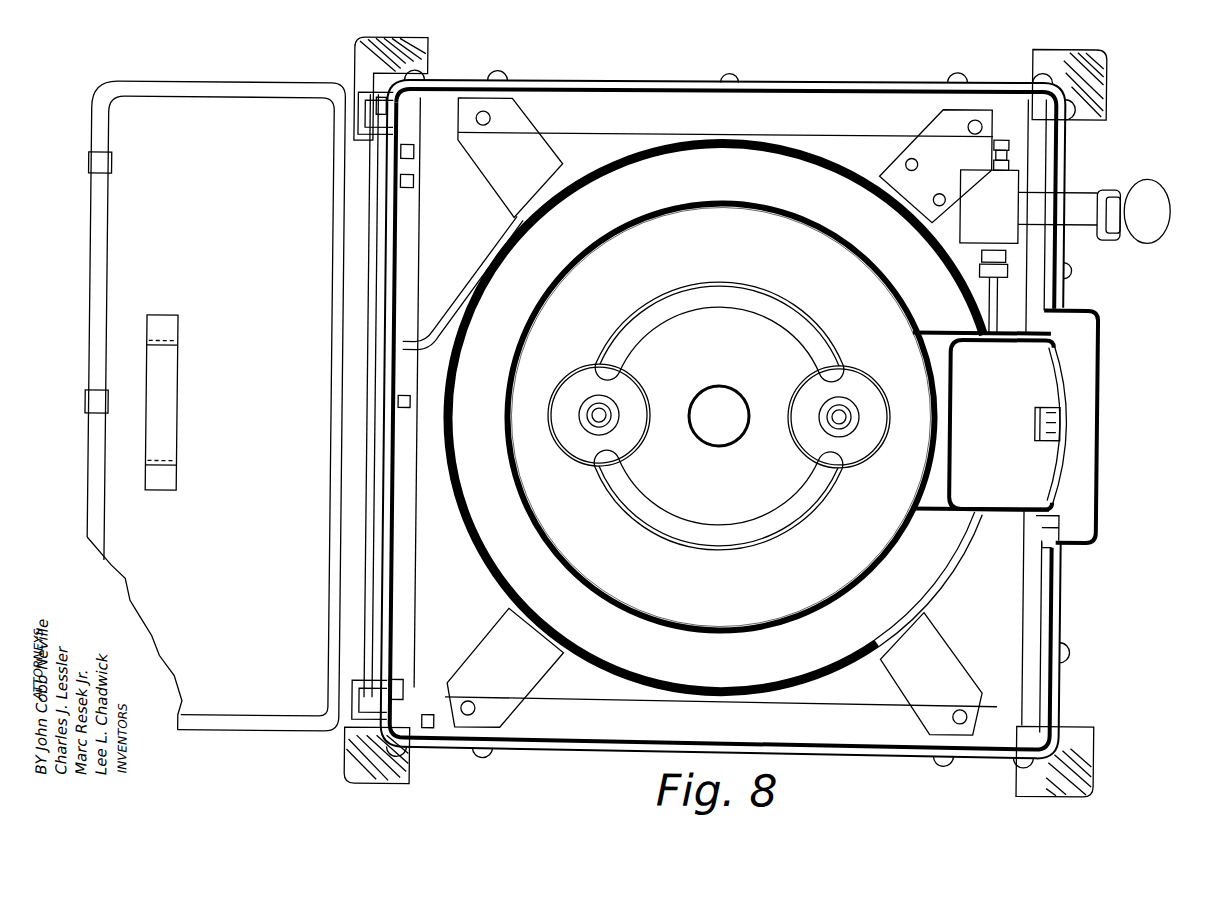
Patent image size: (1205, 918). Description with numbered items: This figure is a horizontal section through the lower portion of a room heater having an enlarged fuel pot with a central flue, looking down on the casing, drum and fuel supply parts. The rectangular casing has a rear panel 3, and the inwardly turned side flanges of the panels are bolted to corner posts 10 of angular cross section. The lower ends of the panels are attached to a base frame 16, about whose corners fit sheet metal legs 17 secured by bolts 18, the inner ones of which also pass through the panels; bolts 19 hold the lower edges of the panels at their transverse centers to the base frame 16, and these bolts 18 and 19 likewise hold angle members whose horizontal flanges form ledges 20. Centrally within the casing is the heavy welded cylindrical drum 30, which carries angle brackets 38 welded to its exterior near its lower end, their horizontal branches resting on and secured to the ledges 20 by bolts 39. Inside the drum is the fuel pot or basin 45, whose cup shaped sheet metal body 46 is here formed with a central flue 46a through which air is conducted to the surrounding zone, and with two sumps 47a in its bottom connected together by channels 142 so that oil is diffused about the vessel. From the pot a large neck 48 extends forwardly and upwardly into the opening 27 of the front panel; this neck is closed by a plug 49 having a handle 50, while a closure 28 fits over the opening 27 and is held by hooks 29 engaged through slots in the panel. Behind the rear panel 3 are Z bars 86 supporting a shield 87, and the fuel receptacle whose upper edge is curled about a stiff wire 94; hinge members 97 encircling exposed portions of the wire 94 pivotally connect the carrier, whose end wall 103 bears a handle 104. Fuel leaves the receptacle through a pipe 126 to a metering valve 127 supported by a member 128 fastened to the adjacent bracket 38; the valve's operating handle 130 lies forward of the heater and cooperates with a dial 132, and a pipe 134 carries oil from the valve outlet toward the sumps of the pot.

The rear panel 3 is at (398, 562).
The corner posts 10 is at (430, 73).
The base frame 16 is at (608, 82).
The legs 17 is at (358, 60).
The bolts 18 is at (1037, 77).
The bolts 19 is at (728, 80).
The ledges 20 is at (724, 410).
The opening 27 is at (1060, 522).
The closure 28 is at (1100, 423).
The hooks 29 is at (1050, 537).
The cylindrical drum 30 is at (465, 313).
The angle brackets 38 is at (492, 173).
The bolts 39 is at (473, 702).
The fuel pot or basin 45 is at (525, 368).
The body 46 is at (722, 204).
The central flue 46a is at (733, 388).
The sumps 47a is at (627, 397).
The neck 48 is at (940, 497).
The plug 49 is at (989, 421).
The handle 50 is at (1032, 415).
The Z bars 86 is at (358, 153).
The shield 87 is at (360, 280).
The wire 94 is at (240, 86).
The hinge members 97 is at (88, 166).
The end wall 103 is at (154, 468).
The handle 104 is at (168, 378).
The pipe 126 is at (458, 258).
The valve 127 is at (1090, 195).
The member 128 is at (989, 208).
The operating handle 130 is at (1150, 228).
The dial 132 is at (1120, 237).
The pipe 134 is at (986, 290).
The channels 142 is at (733, 293).